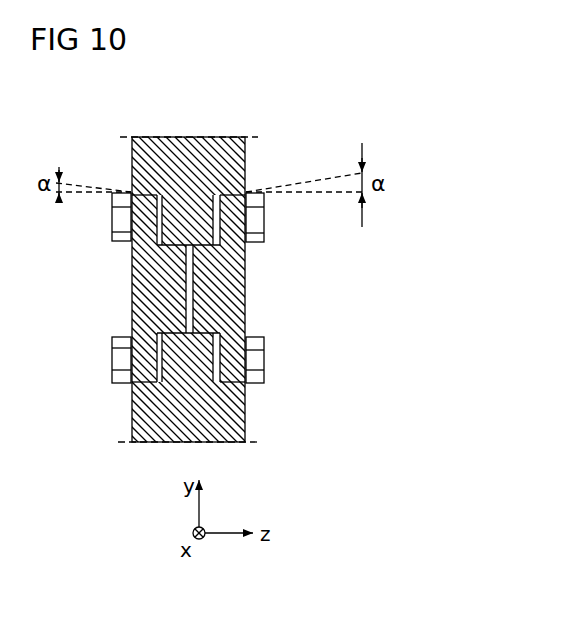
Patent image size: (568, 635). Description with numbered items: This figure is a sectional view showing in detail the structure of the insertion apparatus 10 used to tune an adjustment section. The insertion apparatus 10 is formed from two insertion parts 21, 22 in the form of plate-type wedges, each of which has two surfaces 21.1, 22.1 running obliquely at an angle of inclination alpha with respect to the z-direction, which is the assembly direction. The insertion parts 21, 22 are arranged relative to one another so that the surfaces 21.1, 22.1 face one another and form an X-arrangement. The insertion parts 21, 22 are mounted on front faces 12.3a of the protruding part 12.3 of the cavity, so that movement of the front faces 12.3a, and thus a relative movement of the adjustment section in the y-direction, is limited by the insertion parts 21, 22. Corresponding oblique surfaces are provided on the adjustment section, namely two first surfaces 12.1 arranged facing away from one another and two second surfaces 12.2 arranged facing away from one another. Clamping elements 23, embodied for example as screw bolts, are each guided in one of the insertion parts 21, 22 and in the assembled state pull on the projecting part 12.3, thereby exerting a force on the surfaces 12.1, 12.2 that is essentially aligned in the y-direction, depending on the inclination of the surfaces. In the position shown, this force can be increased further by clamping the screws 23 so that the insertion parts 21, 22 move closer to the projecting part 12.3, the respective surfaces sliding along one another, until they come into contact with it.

The assembly 10 is at (223, 96).
The oblique surface of insertion part 22.1 is at (153, 190).
The oblique surface of insertion part 21.1 is at (221, 190).
The insertion part 22 is at (140, 300).
The insertion part 21 is at (245, 290).
The first surface 12.1 is at (264, 208).
The second surface 12.2 is at (113, 216).
The protruding part 12.3 is at (163, 238).
The front face 12.3a is at (222, 250).
The clamping element 23 is at (122, 188).